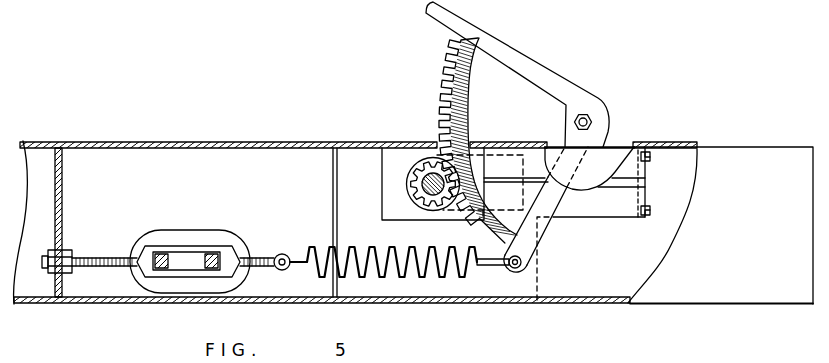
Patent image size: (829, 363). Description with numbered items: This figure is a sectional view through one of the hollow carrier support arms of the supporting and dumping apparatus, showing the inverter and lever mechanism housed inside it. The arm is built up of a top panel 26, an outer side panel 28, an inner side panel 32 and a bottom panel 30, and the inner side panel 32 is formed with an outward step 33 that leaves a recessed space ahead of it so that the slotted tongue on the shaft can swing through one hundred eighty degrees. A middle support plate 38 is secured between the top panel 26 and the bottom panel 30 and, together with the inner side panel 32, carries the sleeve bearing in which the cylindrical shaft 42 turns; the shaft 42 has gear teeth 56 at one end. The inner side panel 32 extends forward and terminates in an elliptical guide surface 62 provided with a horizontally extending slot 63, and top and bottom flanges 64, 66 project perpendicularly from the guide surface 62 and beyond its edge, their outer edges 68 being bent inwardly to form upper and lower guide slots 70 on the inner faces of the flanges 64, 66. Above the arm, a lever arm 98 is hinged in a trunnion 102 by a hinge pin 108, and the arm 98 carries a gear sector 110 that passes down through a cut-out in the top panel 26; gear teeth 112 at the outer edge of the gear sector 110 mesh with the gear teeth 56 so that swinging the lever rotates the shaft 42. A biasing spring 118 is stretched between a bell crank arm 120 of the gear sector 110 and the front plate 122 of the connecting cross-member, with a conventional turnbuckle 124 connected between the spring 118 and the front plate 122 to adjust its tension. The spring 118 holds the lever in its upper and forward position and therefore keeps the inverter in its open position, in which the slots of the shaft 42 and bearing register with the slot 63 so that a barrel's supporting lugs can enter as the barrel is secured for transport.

The top panel 26 is at (143, 144).
The outer side panel 28 is at (712, 298).
The bottom panel 30 is at (541, 303).
The inner side panel 32 is at (278, 198).
The outward step 33 is at (330, 156).
The middle support plate 38 is at (386, 160).
The cylindrical shaft 42 is at (422, 182).
The gear teeth 56 is at (422, 156).
The elliptical guide surface 62 is at (650, 178).
The horizontally extending slot 63 is at (620, 188).
The top flange 64 is at (655, 148).
The bottom flange 66 is at (648, 220).
The outer edges of flanges 68 is at (651, 156).
The guide slots 70 is at (652, 161).
The lever arm 98 is at (430, 12).
The trunnion 102 is at (600, 128).
The hinge pin 108 is at (589, 112).
The gear sector 110 is at (445, 56).
The gear teeth 112 is at (446, 82).
The biasing spring 118 is at (374, 247).
The bell crank arm 120 is at (531, 258).
The front plate 122 is at (64, 199).
The turnbuckle 124 is at (179, 250).